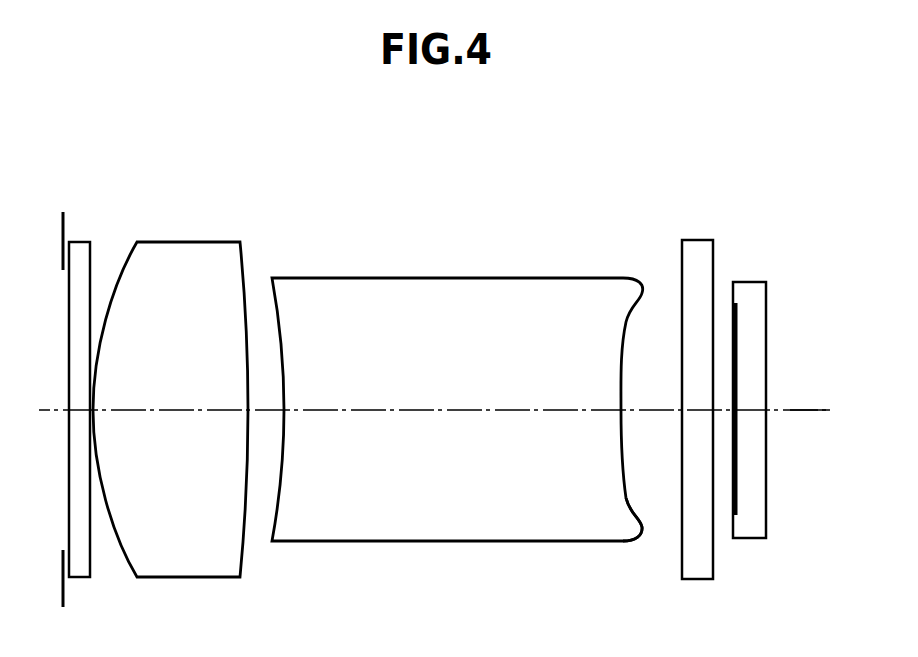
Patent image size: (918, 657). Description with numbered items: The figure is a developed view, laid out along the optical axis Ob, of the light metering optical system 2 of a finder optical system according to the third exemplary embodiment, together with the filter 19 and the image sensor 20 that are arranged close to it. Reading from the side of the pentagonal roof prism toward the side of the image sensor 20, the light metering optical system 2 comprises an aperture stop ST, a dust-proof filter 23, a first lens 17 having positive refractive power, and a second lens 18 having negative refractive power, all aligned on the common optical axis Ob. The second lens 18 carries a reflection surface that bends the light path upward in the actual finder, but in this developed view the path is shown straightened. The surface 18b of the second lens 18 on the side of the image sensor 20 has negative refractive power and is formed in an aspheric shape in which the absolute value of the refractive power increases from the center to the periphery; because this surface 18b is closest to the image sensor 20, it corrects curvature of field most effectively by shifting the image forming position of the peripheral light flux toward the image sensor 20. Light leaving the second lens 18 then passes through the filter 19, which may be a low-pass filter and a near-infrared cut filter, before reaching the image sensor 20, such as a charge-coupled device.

The light metering optical system 2 is at (524, 169).
The aperture stop ST is at (62, 221).
The dust-proof filter 23 is at (82, 249).
The first lens 17 is at (185, 255).
The second lens 18 is at (446, 290).
The surface of the second lens on the side of the image sensor 18b is at (646, 512).
The filter 19 is at (698, 250).
The image sensor 20 is at (748, 293).
The optical axis Ob is at (803, 409).